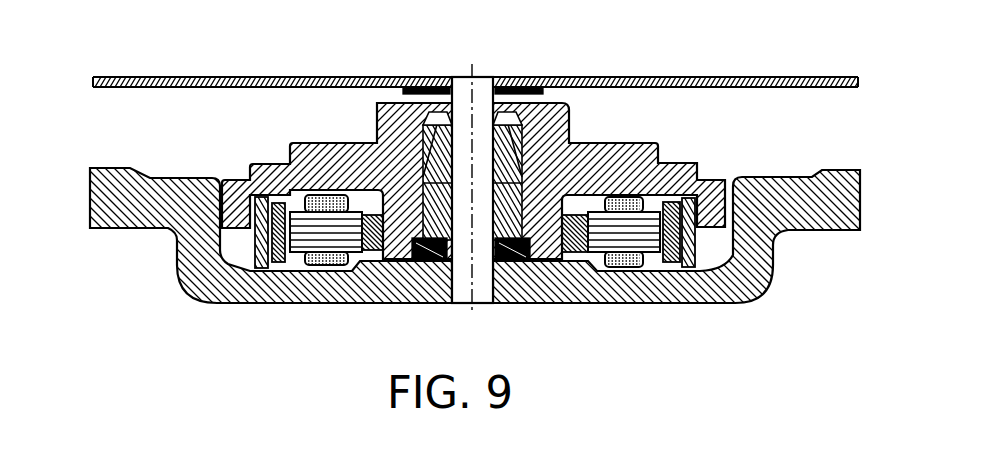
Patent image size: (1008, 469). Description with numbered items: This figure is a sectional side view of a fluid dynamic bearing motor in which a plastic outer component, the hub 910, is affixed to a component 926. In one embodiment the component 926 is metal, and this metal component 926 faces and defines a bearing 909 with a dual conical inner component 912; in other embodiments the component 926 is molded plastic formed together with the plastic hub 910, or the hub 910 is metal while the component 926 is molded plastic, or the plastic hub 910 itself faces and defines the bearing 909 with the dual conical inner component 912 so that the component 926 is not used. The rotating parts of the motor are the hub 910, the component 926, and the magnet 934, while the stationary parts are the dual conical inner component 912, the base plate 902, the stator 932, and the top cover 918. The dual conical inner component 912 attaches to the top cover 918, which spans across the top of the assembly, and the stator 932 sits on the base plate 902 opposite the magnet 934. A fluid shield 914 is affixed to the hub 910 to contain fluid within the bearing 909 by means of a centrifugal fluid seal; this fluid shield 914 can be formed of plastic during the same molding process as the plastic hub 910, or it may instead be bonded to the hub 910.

The base plate 902 is at (555, 275).
The bearing 909 is at (445, 100).
The hub 910 is at (597, 147).
The dual conical inner component 912 is at (462, 290).
The fluid shield 914 is at (417, 260).
The top cover 918 is at (680, 77).
The component 926 is at (538, 133).
The stator 932 is at (627, 268).
The magnet 934 is at (682, 268).